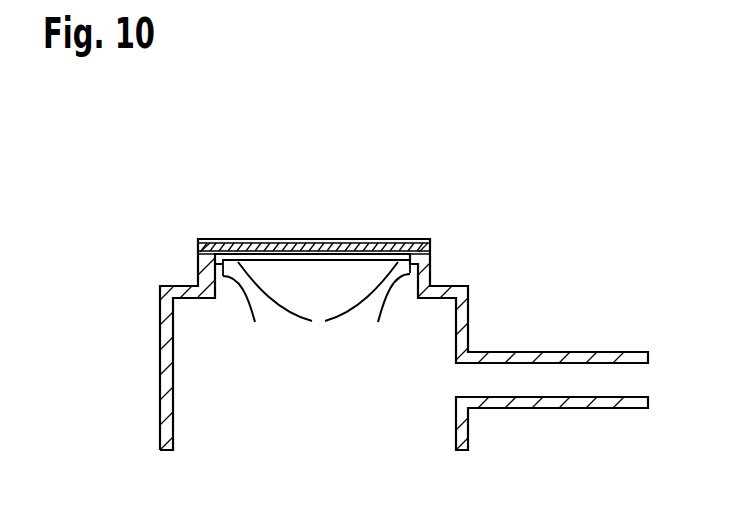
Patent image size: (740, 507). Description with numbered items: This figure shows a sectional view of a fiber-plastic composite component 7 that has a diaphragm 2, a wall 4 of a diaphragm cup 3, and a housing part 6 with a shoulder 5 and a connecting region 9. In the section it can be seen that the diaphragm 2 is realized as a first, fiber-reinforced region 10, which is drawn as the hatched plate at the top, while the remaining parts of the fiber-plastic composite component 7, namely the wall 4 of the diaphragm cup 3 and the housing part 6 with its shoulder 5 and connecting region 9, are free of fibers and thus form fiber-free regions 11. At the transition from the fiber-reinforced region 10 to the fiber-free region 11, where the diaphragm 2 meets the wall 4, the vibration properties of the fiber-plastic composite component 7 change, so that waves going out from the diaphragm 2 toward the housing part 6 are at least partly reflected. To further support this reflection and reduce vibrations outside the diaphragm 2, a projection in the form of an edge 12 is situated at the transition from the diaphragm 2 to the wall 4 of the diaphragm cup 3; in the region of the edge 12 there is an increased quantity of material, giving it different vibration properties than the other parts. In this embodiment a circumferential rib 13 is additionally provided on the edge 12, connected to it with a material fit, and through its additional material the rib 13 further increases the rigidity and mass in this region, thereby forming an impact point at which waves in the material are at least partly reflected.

The diaphragm 2 is at (369, 239).
The diaphragm cup 3 is at (466, 223).
The wall 4 is at (431, 282).
The shoulder 5 is at (178, 287).
The housing part 6 is at (468, 317).
The fiber-plastic composite component 7 is at (556, 258).
The connecting region 9 is at (586, 352).
The fiber-reinforced region 10 is at (271, 239).
The fiber-free region 11 is at (198, 262).
The edge 12 is at (316, 309).
The circumferential rib 13 is at (316, 316).